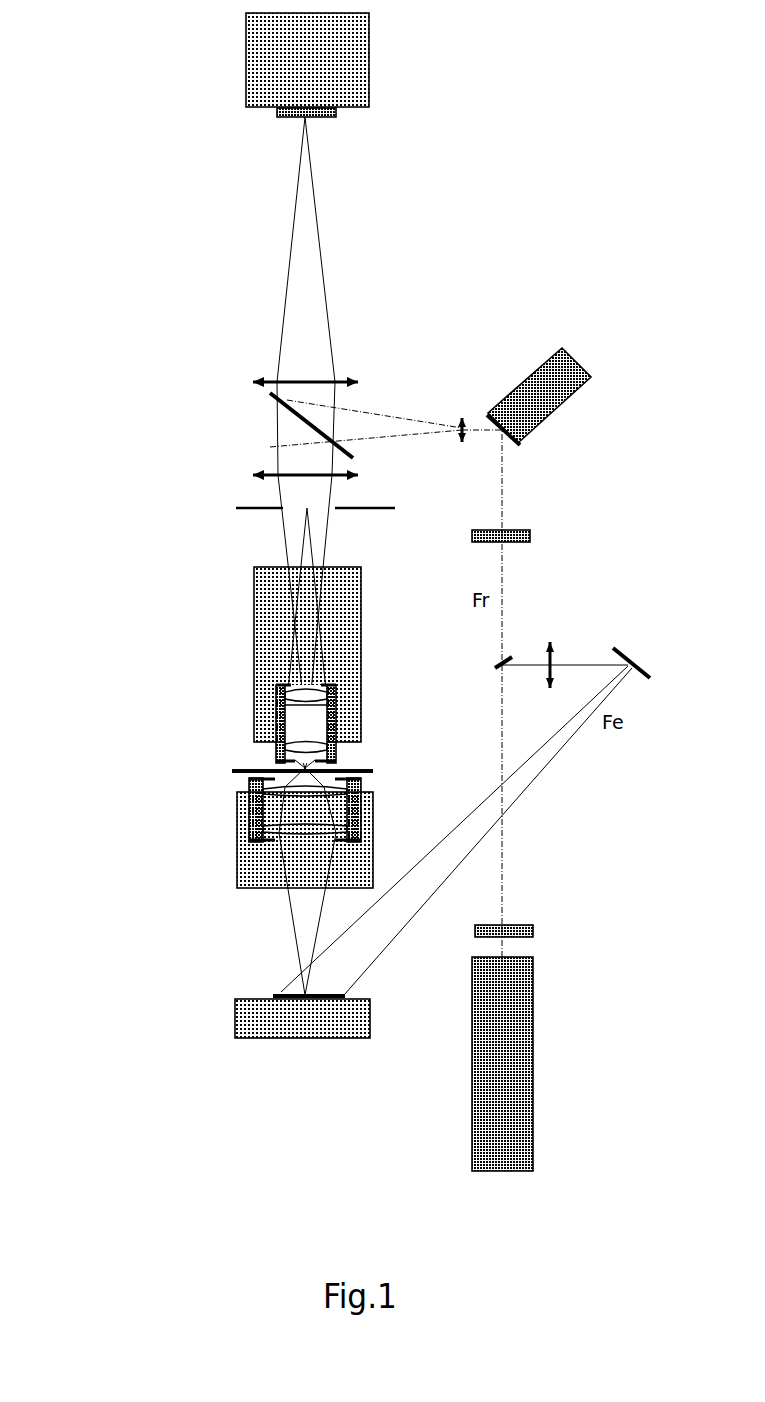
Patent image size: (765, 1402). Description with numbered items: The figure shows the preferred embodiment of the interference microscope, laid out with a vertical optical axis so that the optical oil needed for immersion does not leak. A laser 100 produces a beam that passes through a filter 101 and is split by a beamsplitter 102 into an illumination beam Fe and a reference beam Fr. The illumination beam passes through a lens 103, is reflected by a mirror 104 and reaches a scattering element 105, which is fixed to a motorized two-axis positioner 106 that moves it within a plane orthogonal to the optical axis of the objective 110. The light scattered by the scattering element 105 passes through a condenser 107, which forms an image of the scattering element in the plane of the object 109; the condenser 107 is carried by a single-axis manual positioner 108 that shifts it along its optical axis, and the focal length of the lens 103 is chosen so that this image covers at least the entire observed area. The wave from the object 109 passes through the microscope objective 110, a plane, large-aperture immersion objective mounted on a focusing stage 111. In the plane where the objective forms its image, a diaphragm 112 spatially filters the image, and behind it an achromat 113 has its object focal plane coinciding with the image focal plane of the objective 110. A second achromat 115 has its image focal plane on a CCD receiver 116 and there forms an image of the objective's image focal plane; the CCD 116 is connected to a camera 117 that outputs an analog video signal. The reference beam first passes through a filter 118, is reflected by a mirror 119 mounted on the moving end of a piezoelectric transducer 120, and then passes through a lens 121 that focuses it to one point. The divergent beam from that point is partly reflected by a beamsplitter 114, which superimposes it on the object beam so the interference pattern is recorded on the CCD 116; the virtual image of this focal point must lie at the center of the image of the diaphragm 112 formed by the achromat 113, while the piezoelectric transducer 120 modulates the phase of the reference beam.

The laser 100 is at (530, 1043).
The filter 101 is at (533, 938).
The beamsplitter 102 is at (517, 653).
The lens 103 is at (555, 648).
The mirror 104 is at (643, 680).
The scattering element 105 is at (280, 990).
The motorized two-axis positioner 106 is at (233, 1012).
The condenser 107 is at (255, 802).
The single-axis manual positioner 108 is at (237, 867).
The object 109 is at (234, 768).
The microscope objective 110 is at (274, 730).
The focusing stage 111 is at (265, 643).
The diaphragm 112 is at (247, 510).
The achromat 113 is at (257, 476).
The beamsplitter 114 is at (307, 427).
The second achromat 115 is at (260, 377).
The CCD receiver 116 is at (280, 118).
The camera 117 is at (252, 50).
The filter 118 is at (533, 538).
The mirror 119 is at (510, 443).
The piezoelectric transducer 120 is at (568, 397).
The lens 121 is at (462, 417).